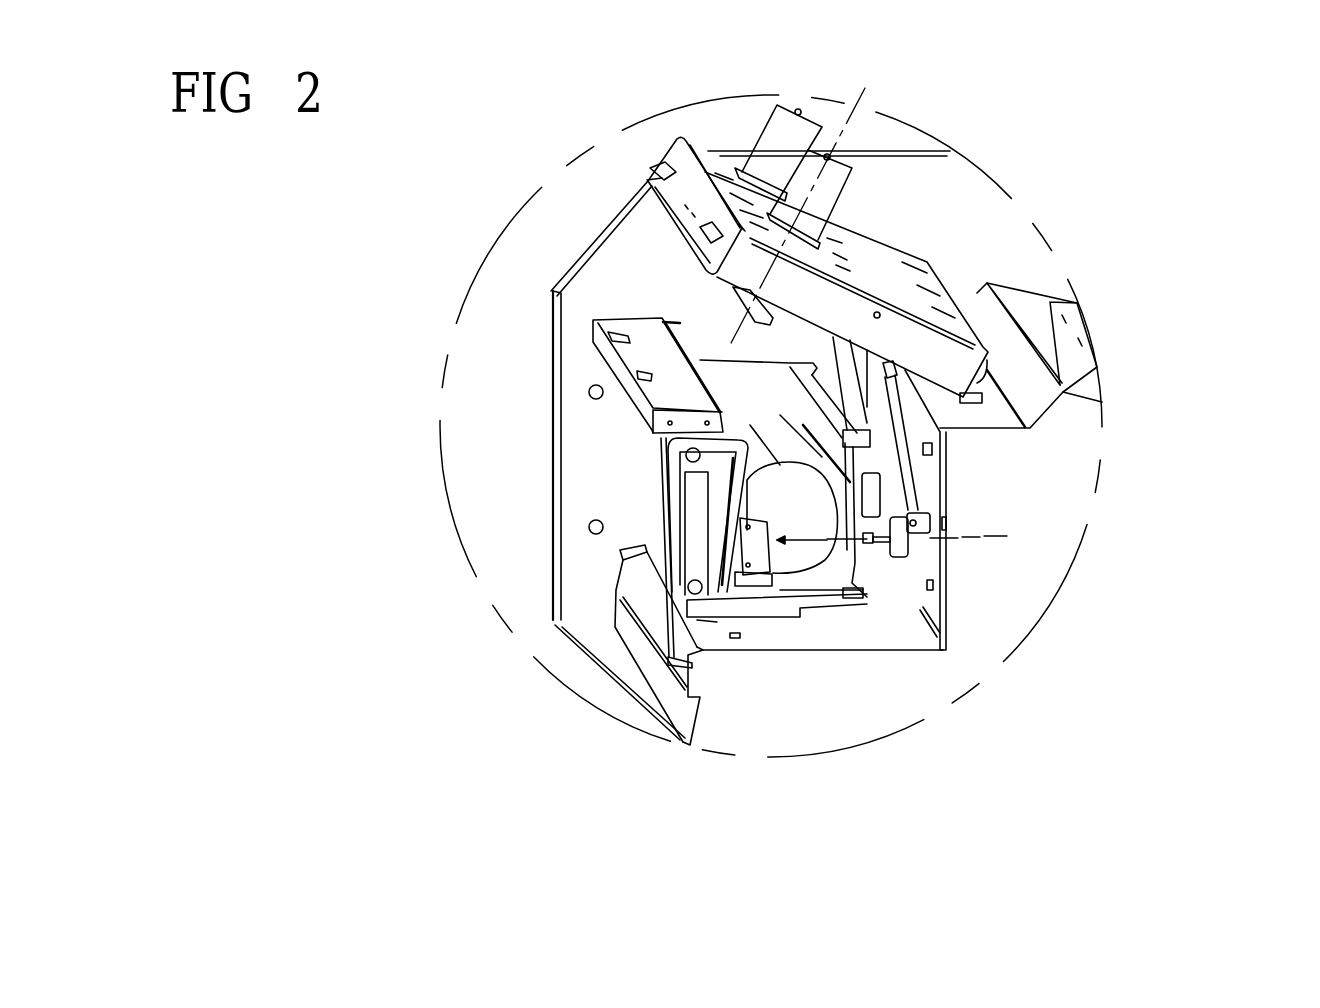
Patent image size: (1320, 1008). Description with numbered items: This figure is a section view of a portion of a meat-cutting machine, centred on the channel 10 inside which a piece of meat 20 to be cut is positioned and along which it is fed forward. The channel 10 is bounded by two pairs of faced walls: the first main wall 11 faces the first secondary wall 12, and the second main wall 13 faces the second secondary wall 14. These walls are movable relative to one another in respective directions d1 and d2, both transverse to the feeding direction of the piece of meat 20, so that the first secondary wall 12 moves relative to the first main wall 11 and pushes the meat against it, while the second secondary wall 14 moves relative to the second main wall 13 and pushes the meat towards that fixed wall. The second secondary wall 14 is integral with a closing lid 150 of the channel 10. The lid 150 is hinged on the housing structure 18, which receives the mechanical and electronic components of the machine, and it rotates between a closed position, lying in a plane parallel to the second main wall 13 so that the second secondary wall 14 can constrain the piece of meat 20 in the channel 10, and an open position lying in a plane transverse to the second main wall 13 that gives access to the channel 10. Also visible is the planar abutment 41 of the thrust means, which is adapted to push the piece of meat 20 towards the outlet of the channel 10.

The channel 10 is at (757, 382).
The first main wall 11 is at (715, 490).
The first secondary wall 12 is at (867, 463).
The second main wall 13 is at (805, 583).
The second secondary wall 14 is at (747, 300).
The housing structure 18 is at (1053, 457).
The piece of meat 20 is at (663, 322).
The planar abutment 41 is at (853, 573).
The closing lid 150 is at (880, 267).
The first transverse direction d1 is at (983, 537).
The second transverse direction d2 is at (840, 135).